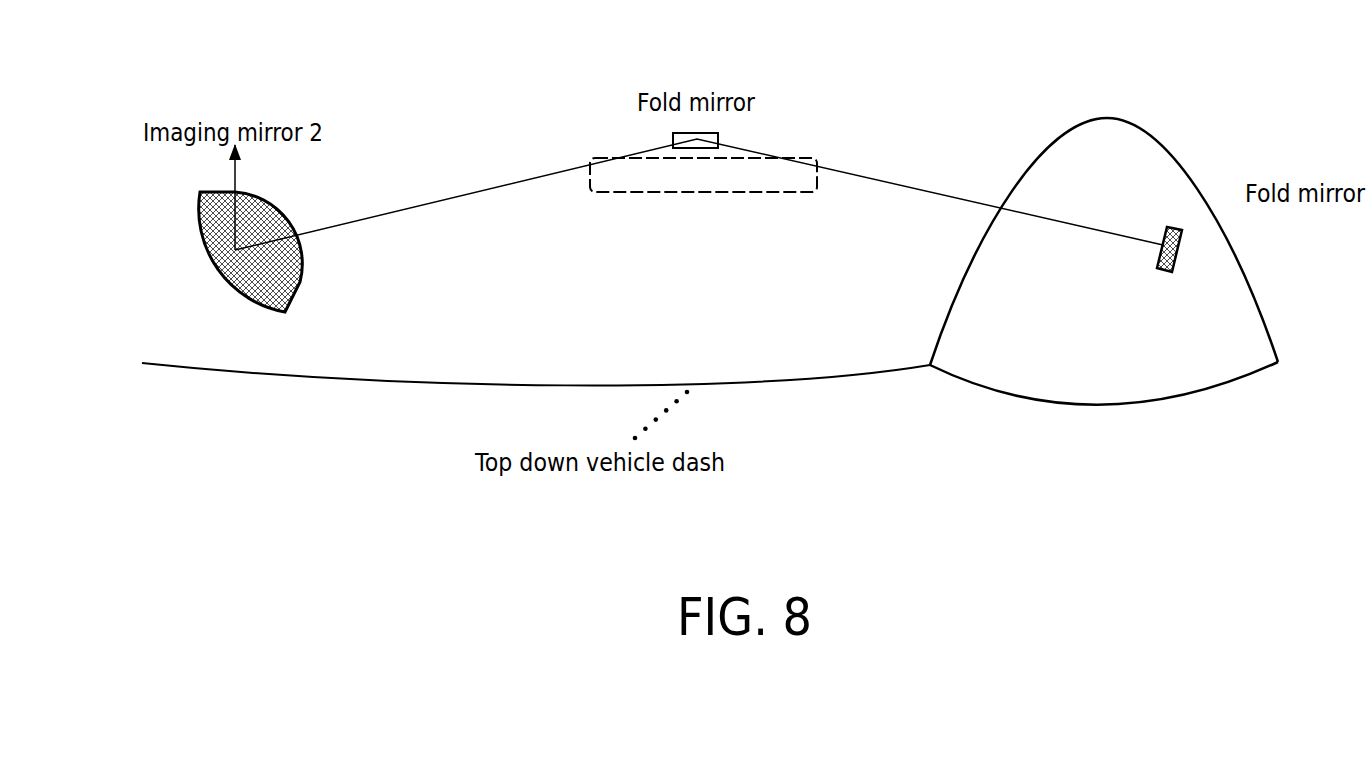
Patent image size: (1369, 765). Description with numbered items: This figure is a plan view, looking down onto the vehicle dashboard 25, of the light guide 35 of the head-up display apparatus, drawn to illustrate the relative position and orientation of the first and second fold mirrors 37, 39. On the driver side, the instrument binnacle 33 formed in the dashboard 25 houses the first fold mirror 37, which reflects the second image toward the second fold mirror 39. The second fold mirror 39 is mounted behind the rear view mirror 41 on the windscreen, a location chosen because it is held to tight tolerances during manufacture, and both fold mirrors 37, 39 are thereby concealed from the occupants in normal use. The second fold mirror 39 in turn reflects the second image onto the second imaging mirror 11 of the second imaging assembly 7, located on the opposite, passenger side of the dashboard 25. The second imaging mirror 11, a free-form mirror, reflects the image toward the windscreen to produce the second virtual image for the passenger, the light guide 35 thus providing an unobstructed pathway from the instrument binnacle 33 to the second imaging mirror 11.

The second imaging assembly 7 is at (1110, 310).
The second imaging mirror 11 is at (207, 225).
The dashboard 25 is at (387, 347).
The instrument binnacle 33 is at (1127, 158).
The light guide 35 is at (895, 128).
The first fold mirror 37 is at (1173, 232).
The second fold mirror 39 is at (717, 140).
The rear view mirror 41 is at (688, 175).